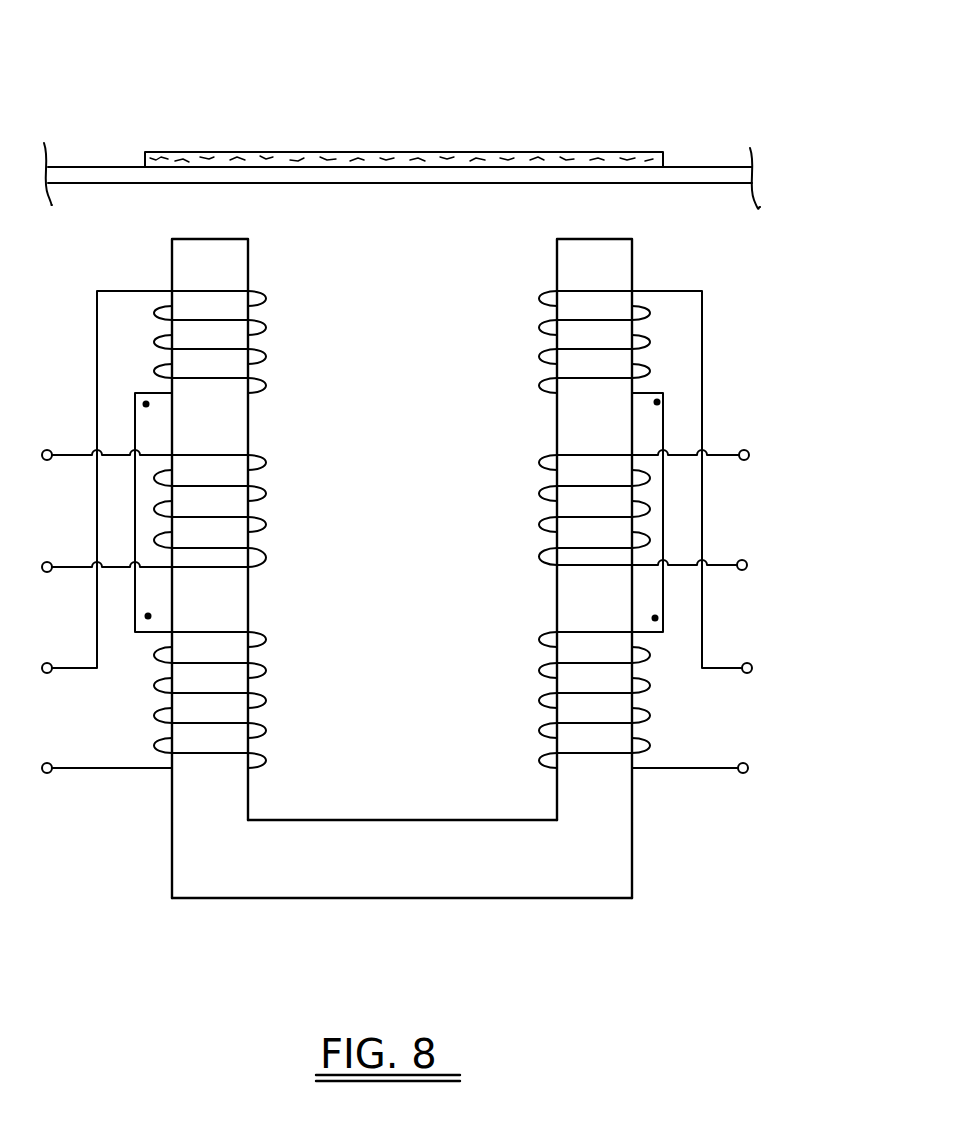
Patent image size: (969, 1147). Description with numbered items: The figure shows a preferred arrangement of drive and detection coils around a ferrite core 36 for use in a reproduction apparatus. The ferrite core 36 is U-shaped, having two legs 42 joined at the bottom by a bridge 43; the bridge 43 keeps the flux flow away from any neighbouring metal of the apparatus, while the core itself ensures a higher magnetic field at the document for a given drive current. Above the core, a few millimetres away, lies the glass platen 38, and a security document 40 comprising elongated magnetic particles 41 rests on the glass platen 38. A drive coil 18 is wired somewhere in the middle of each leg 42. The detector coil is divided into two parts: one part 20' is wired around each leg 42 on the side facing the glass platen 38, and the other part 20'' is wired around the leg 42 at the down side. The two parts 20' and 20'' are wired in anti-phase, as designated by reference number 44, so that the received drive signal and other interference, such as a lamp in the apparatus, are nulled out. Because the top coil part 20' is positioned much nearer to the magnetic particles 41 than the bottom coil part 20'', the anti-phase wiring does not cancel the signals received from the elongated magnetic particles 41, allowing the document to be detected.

The drive coil 18 is at (266, 558).
The detector coil top part 20' is at (402, 340).
The detector coil bottom part 20'' is at (402, 700).
The ferrite core 36 is at (470, 556).
The glass platen 38 is at (722, 170).
The security document 40 is at (540, 160).
The elongated magnetic particles 41 is at (187, 157).
The leg 42 is at (232, 436).
The bridge 43 is at (425, 882).
The anti-phase wiring 44 is at (662, 400).